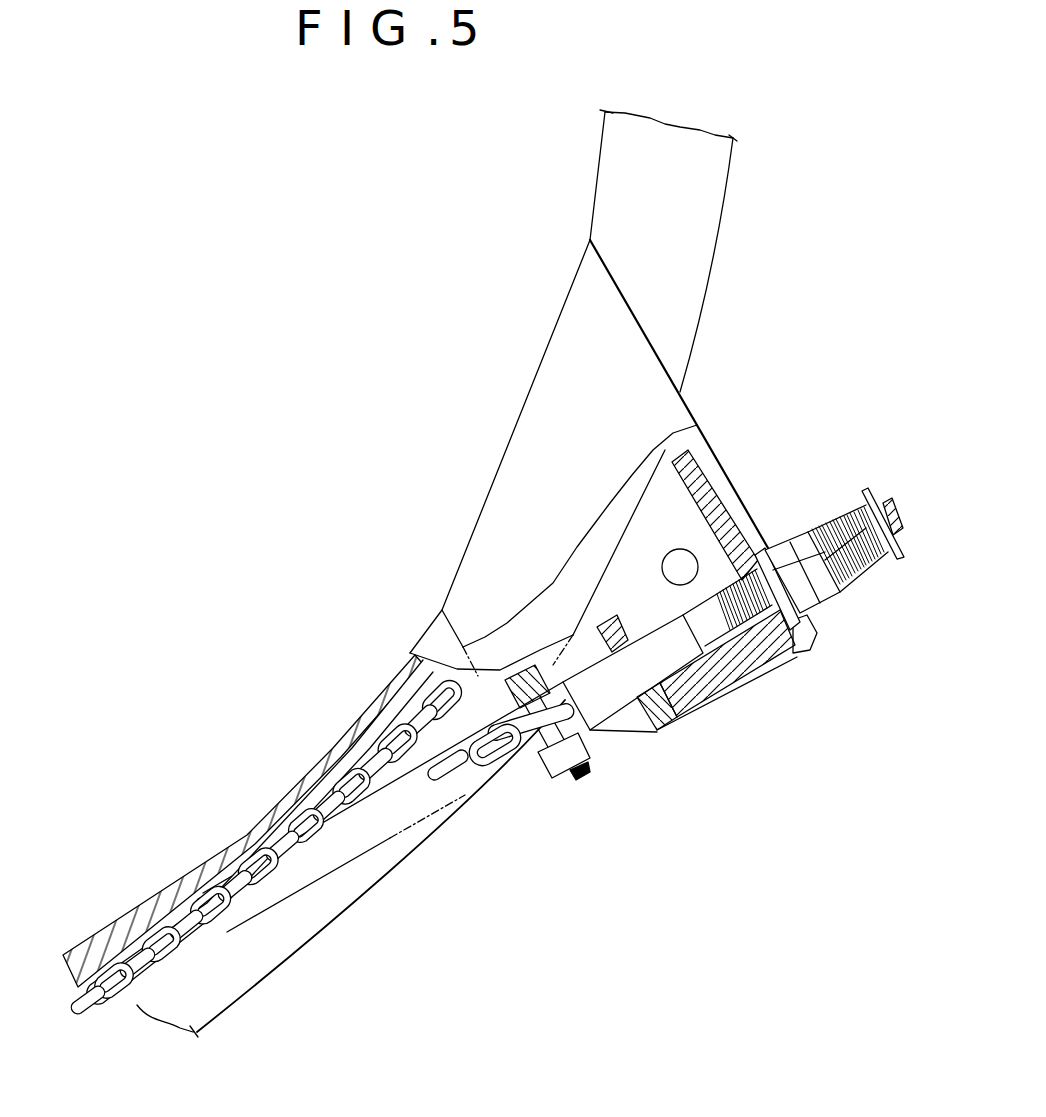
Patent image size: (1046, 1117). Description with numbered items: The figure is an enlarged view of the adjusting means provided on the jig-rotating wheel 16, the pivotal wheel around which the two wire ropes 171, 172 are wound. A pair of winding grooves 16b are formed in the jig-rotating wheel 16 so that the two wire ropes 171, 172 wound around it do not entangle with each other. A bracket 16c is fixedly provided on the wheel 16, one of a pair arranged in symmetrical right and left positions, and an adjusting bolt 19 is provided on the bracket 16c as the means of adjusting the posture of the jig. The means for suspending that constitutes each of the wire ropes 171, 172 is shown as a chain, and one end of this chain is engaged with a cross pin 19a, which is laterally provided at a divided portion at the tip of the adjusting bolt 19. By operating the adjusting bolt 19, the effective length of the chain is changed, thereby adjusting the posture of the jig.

The jig-rotating wheel 16 is at (700, 212).
The winding grooves 16b is at (263, 842).
The bracket 16c is at (693, 440).
The adjusting bolt 19 is at (834, 537).
The cross pin 19a is at (560, 778).
The wire rope 171 is at (463, 782).
The wire rope 172 is at (345, 787).